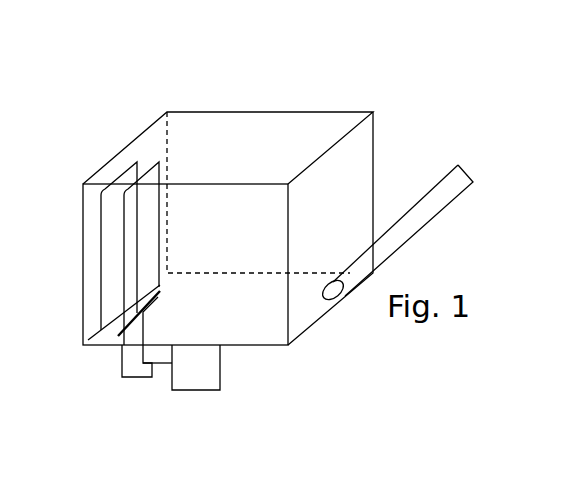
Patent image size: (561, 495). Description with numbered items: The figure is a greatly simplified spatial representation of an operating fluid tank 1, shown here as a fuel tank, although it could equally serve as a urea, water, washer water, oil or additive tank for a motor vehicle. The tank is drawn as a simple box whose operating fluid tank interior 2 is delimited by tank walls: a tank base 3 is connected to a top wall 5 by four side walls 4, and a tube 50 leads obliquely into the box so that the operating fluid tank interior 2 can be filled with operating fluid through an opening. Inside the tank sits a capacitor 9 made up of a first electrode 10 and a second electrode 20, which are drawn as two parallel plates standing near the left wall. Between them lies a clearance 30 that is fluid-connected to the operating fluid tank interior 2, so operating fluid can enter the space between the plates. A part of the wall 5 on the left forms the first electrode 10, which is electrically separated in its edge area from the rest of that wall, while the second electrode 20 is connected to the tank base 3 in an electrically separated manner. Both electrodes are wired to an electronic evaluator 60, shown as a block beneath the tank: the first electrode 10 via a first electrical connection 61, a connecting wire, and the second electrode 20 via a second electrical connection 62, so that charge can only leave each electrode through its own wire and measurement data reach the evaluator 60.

The operating fluid tank 1 is at (118, 101).
The operating fluid tank interior 2 is at (273, 141).
The tank base 3 is at (266, 322).
The side wall 4 is at (234, 122).
The top wall 5 is at (353, 158).
The capacitor 9 is at (147, 153).
The first electrode 10 is at (113, 192).
The second electrode 20 is at (165, 170).
The clearance 30 is at (115, 240).
The tube 50 is at (435, 213).
The electronic evaluator 60 is at (212, 368).
The first electrical connection 61 is at (122, 380).
The second electrical connection 62 is at (150, 380).